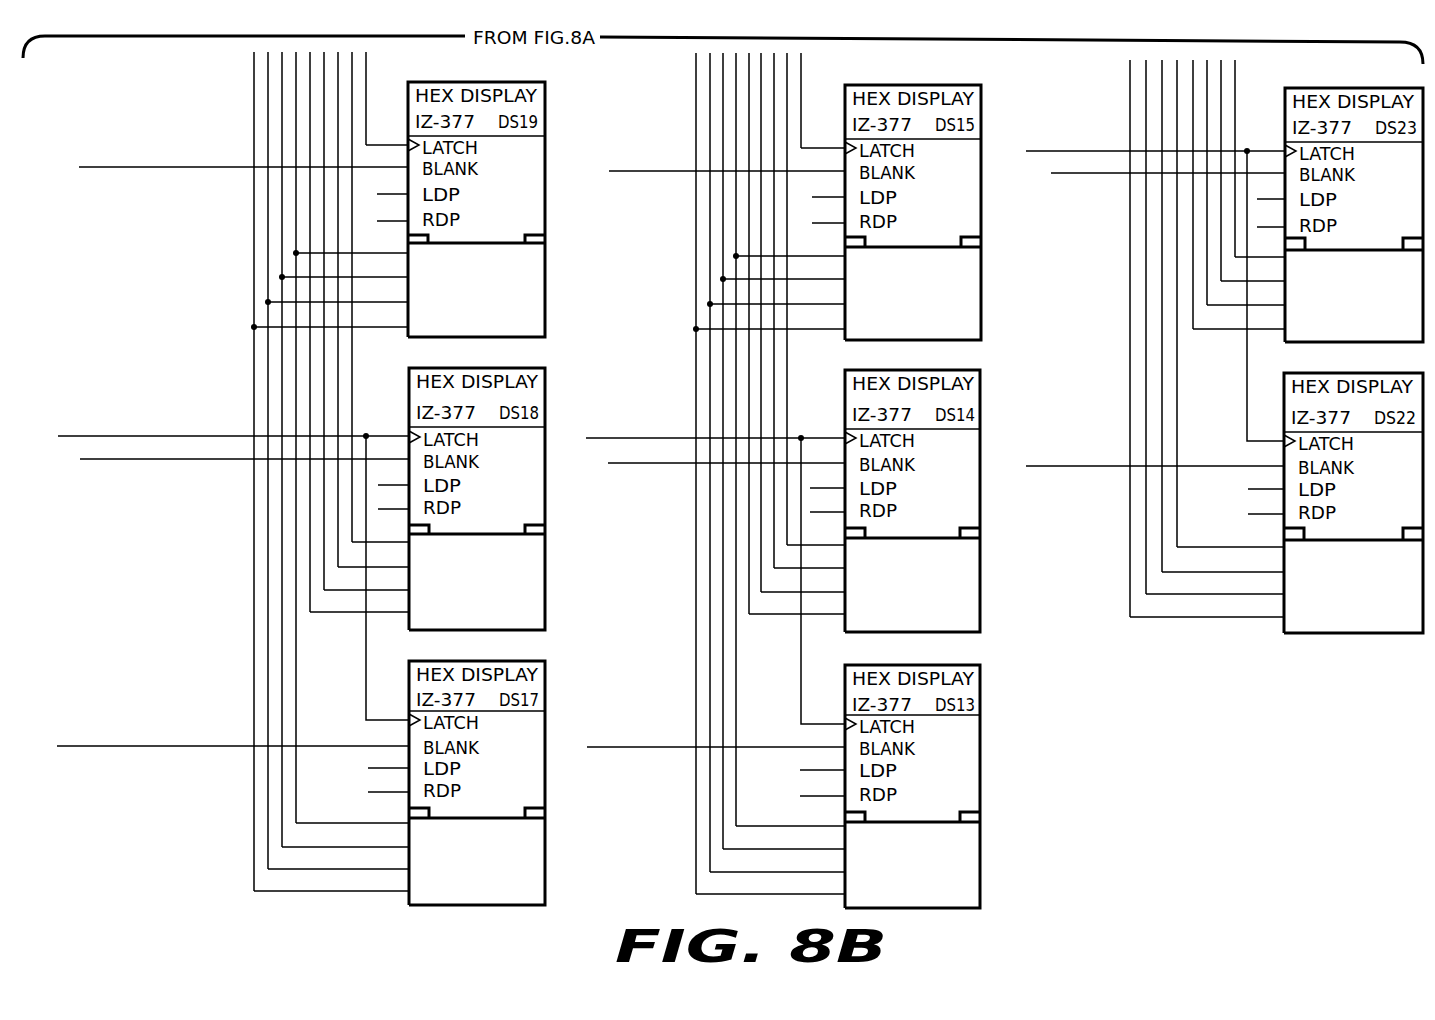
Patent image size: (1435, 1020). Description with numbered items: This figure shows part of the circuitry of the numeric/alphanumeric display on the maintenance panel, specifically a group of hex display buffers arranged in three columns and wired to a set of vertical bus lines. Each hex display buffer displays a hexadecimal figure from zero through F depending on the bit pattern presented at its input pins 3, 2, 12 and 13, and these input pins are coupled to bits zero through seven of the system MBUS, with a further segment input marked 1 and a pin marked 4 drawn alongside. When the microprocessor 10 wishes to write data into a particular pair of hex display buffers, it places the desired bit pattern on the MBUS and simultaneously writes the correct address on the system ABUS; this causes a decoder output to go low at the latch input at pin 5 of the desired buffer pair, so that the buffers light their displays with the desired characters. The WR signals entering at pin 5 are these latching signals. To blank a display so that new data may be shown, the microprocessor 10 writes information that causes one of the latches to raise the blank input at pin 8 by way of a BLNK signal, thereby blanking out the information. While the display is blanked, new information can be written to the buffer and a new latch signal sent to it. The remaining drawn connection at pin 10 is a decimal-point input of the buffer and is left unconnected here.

The latch input pin 5 is at (657, 434).
The blank input pin 8 is at (680, 525).
The LDP pin 4 / segment input 4 is at (836, 528).
The microprocessor 10 is at (826, 499).
The input pin 3 is at (789, 529).
The input pin 2 is at (791, 558).
The input pin 13 is at (775, 577).
The input pin 12 is at (768, 601).
The segment input 1 is at (860, 541).